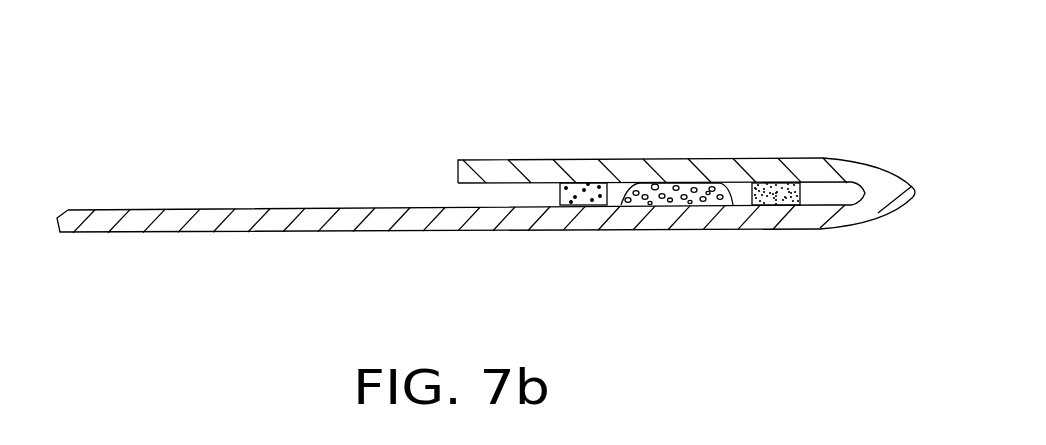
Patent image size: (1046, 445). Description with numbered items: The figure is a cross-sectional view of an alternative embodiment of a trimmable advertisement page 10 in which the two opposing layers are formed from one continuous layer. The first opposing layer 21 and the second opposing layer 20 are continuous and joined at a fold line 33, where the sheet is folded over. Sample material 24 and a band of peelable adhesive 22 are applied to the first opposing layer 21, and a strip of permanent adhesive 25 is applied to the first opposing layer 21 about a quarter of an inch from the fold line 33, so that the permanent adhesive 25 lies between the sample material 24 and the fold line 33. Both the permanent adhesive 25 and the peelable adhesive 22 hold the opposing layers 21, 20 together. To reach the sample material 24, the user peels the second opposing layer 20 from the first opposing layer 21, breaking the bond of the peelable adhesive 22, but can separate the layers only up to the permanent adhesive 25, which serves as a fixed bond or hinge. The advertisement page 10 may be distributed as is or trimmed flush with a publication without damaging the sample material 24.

The advertisement page 10 is at (320, 136).
The second opposing layer 20 is at (670, 166).
The first opposing layer 21 is at (418, 219).
The peelable adhesive 22 is at (593, 193).
The sample material 24 is at (689, 196).
The permanent adhesive 25 is at (770, 188).
The fold line 33 is at (882, 181).